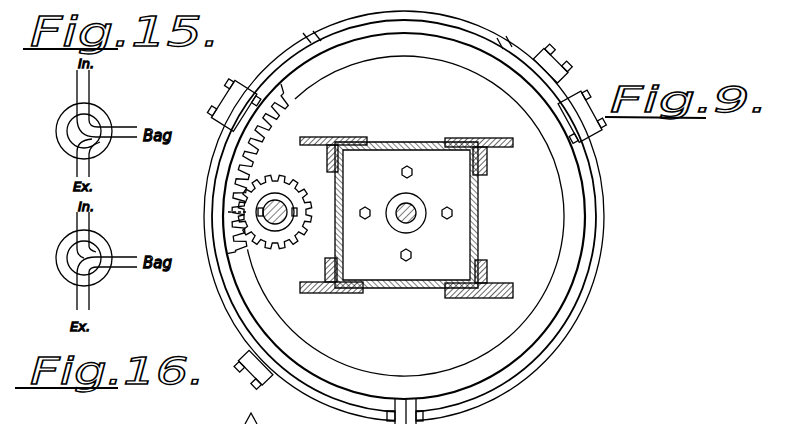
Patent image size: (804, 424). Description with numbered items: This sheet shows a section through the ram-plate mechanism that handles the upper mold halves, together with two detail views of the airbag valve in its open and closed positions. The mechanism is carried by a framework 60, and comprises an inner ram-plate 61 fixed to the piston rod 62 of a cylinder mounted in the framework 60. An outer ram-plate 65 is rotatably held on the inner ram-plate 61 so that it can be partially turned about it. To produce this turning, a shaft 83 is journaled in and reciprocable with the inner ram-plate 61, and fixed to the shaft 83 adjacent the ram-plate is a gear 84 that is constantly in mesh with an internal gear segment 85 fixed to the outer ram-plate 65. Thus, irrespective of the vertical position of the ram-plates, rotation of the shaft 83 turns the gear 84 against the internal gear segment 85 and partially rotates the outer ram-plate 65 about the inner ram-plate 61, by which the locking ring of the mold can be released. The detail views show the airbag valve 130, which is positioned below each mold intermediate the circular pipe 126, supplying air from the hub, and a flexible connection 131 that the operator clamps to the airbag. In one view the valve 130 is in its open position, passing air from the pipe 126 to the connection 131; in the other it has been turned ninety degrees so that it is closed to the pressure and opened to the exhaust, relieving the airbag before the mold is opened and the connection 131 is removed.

In FIG. 9, the framework 60 is at (487, 162).
In FIG. 9, the inner ram-plate 61 is at (312, 322).
In FIG. 9, the piston rod 62 is at (400, 205).
In FIG. 9, the outer ram-plate 65 is at (598, 238).
In FIG. 9, the shaft 83 is at (275, 222).
In FIG. 9, the gear 84 is at (284, 184).
In FIG. 9, the internal gear segment 85 is at (238, 166).
In FIG. 15, the circular pipe 126 is at (89, 92).
In FIG. 16, the circular pipe 126 is at (89, 222).
In FIG. 15, the valve 130 is at (66, 118).
In FIG. 16, the valve 130 is at (66, 245).
In FIG. 15, the flexible connection 131 is at (125, 130).
In FIG. 16, the flexible connection 131 is at (125, 258).